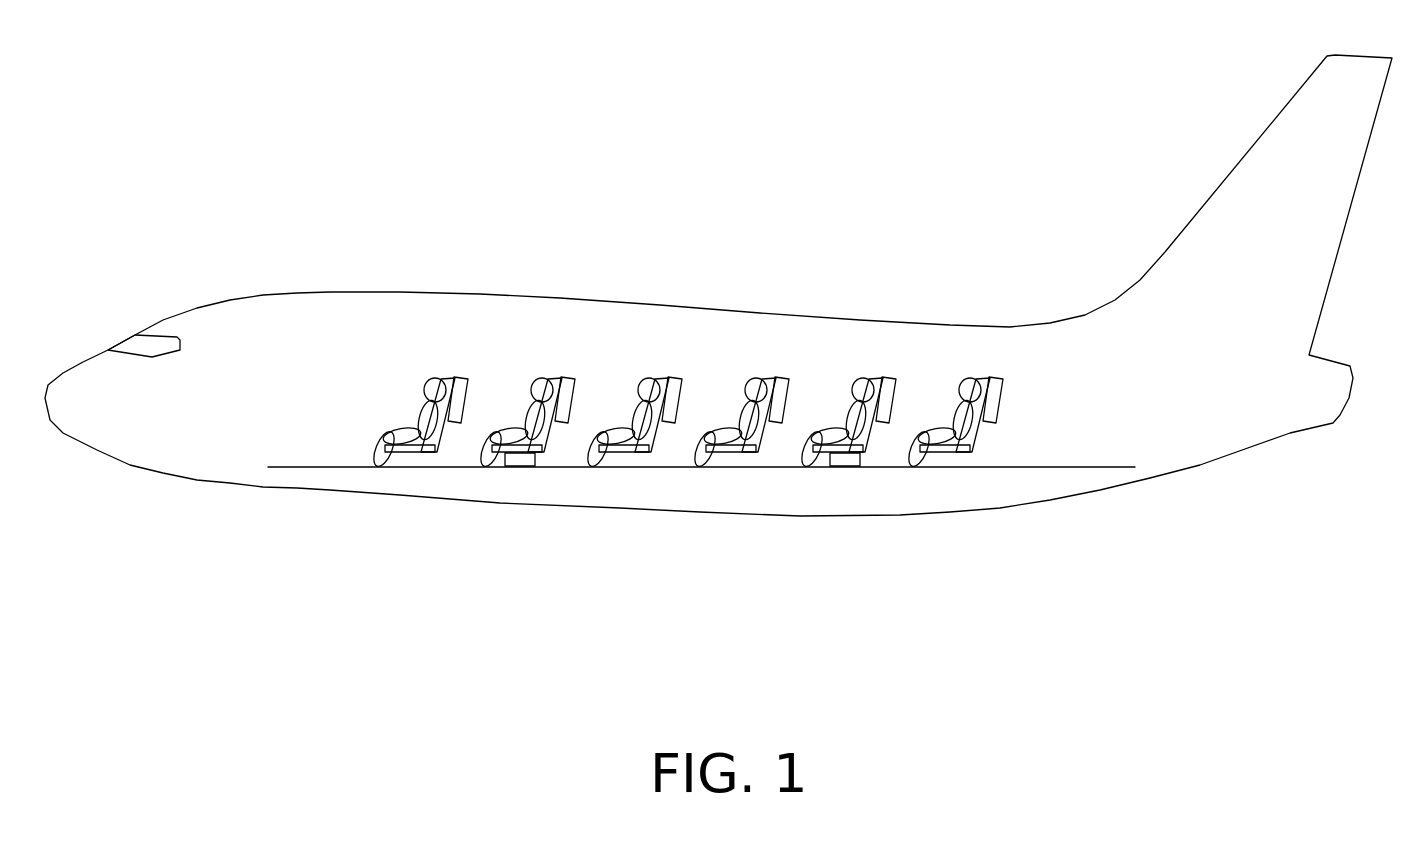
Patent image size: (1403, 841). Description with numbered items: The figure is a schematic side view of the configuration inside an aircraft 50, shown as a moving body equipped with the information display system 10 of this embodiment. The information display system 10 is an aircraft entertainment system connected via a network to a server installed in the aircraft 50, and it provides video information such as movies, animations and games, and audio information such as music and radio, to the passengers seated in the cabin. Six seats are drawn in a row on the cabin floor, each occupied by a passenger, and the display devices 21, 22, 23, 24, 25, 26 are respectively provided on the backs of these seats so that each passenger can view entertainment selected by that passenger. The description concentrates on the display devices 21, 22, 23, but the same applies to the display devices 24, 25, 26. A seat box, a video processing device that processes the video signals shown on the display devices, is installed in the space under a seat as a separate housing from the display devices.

The aircraft 50 is at (197, 272).
The information display system 10 is at (1035, 398).
The display device 21 is at (473, 331).
The display device 22 is at (582, 331).
The display device 23 is at (691, 332).
The display device 24 is at (798, 334).
The display device 25 is at (910, 340).
The display device 26 is at (1019, 338).